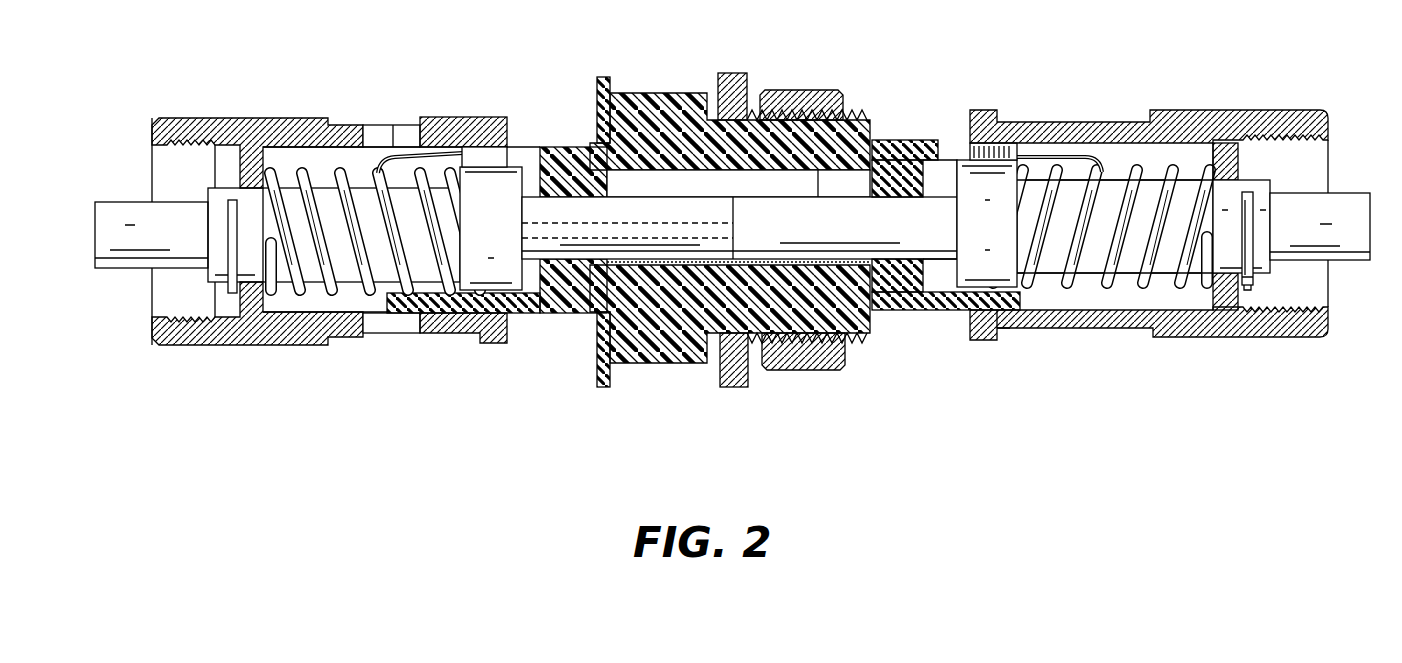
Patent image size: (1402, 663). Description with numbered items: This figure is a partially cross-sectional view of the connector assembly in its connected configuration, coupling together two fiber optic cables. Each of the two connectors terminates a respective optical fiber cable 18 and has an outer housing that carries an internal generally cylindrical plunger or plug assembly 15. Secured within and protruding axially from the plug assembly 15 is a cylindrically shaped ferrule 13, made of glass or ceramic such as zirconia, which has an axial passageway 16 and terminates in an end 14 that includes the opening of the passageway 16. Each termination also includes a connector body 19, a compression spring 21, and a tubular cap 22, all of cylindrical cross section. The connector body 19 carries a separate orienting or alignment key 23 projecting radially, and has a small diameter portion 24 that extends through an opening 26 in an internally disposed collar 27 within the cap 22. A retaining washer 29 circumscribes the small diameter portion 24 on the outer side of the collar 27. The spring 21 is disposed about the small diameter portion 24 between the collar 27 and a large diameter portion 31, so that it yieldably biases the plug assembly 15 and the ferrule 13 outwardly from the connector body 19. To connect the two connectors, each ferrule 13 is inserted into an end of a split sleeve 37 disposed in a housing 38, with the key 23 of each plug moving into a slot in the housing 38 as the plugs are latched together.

The ferrule 13 is at (578, 215).
The end 14 is at (737, 228).
The plug assembly 15 is at (322, 176).
The axial passageway 16 is at (538, 227).
The optical fiber cable 18 is at (1353, 215).
The connector body 19 is at (960, 310).
The compression spring 21 is at (1133, 170).
The tubular cap 22 is at (1160, 337).
The alignment key 23 is at (985, 150).
The small diameter portion 24 is at (1130, 262).
The opening 26 is at (1253, 187).
The collar 27 is at (1222, 290).
The retaining washer 29 is at (1250, 280).
The large diameter portion 31 is at (1010, 330).
The split sleeve 37 is at (690, 270).
The housing 38 is at (633, 350).